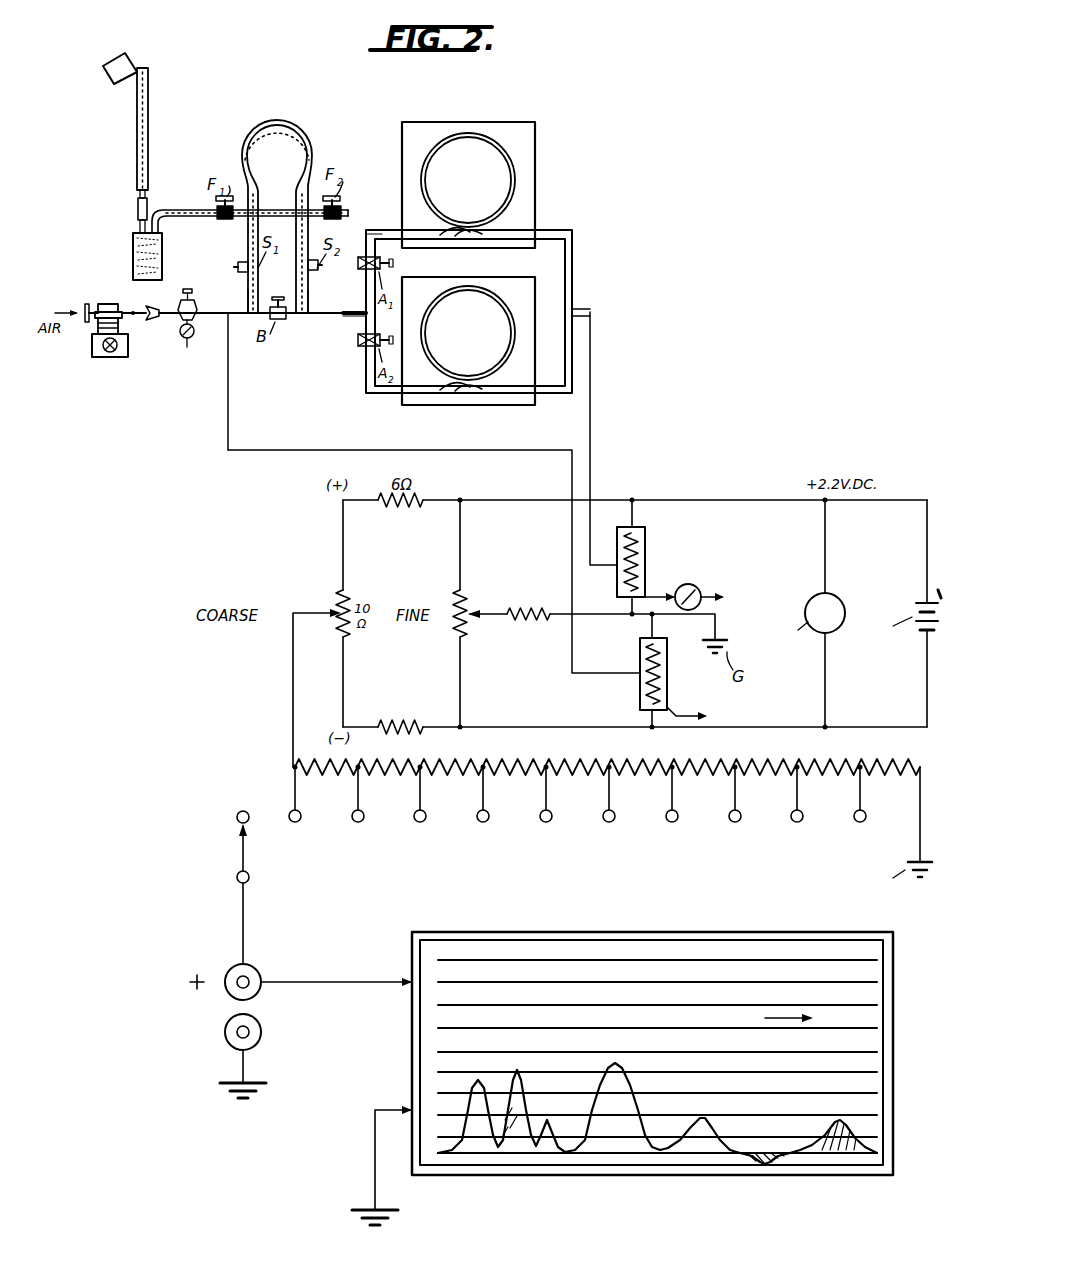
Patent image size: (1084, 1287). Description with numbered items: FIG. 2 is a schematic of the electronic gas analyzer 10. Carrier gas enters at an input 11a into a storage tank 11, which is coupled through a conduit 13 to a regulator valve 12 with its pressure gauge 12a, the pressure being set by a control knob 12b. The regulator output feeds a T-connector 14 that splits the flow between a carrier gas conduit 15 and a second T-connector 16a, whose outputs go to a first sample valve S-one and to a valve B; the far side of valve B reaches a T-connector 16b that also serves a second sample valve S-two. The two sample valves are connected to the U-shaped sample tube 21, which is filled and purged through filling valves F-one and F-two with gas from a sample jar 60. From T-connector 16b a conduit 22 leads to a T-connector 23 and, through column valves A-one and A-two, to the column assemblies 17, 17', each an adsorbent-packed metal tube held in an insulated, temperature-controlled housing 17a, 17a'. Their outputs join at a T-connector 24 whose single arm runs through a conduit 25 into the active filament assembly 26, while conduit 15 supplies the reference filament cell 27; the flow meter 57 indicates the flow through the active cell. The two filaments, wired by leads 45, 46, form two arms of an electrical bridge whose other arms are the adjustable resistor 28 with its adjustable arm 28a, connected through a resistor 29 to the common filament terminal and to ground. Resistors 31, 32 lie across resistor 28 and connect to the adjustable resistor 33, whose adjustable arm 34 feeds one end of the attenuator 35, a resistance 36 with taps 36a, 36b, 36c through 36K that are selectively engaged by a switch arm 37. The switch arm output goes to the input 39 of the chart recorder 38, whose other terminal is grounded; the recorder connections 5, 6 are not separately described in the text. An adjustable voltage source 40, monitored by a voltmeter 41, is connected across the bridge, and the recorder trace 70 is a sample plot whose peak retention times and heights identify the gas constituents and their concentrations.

The recorder black lead 5 is at (404, 1108).
The recorder positive lead 6 is at (404, 980).
The analyzer 10 is at (690, 167).
The storage tank 11 is at (110, 304).
The input 11a is at (87, 304).
The regulator valve 12 is at (178, 312).
The pressure gauge 12a is at (188, 347).
The control knob 12b is at (191, 289).
The conduit 13 is at (134, 316).
The T-connector 14 is at (227, 311).
The carrier gas conduit 15 is at (494, 453).
The second T-connector 16a is at (256, 300).
The T-connector 16b is at (309, 306).
The column assembly 17 is at (468, 184).
The column assembly 17' is at (468, 338).
The housing 17a is at (491, 185).
The housing 17a' is at (473, 356).
The sample tube 21 is at (297, 102).
The conduit 22 is at (382, 230).
The T-connector 23 is at (350, 322).
The T-connector 24 is at (589, 311).
The conduit 25 is at (592, 401).
The active filament assembly 26 is at (648, 561).
The reference filament cell 27 is at (638, 693).
The adjustable resistor 28 is at (472, 608).
The adjustable arm 28a is at (491, 619).
The resistor 29 is at (525, 622).
The resistor 31 is at (402, 508).
The resistor 32 is at (414, 699).
The adjustable resistor 33 is at (350, 604).
The adjustable arm 34 is at (328, 606).
The attenuator 35 is at (610, 813).
The resistance 36 is at (462, 760).
The tap 36a is at (237, 819).
The tap 36b is at (309, 786).
The tap 36c is at (372, 786).
The tap 36K is at (880, 794).
The switch arm 37 is at (240, 848).
The chart recorder 38 is at (652, 1047).
The input 39 is at (226, 1034).
The voltage source 40 is at (939, 615).
The voltmeter 41 is at (838, 598).
The lead 45 is at (675, 499).
The lead 46 is at (733, 731).
The flow meter 57 is at (691, 586).
The jar 60 is at (133, 246).
The plot 70 is at (628, 1058).